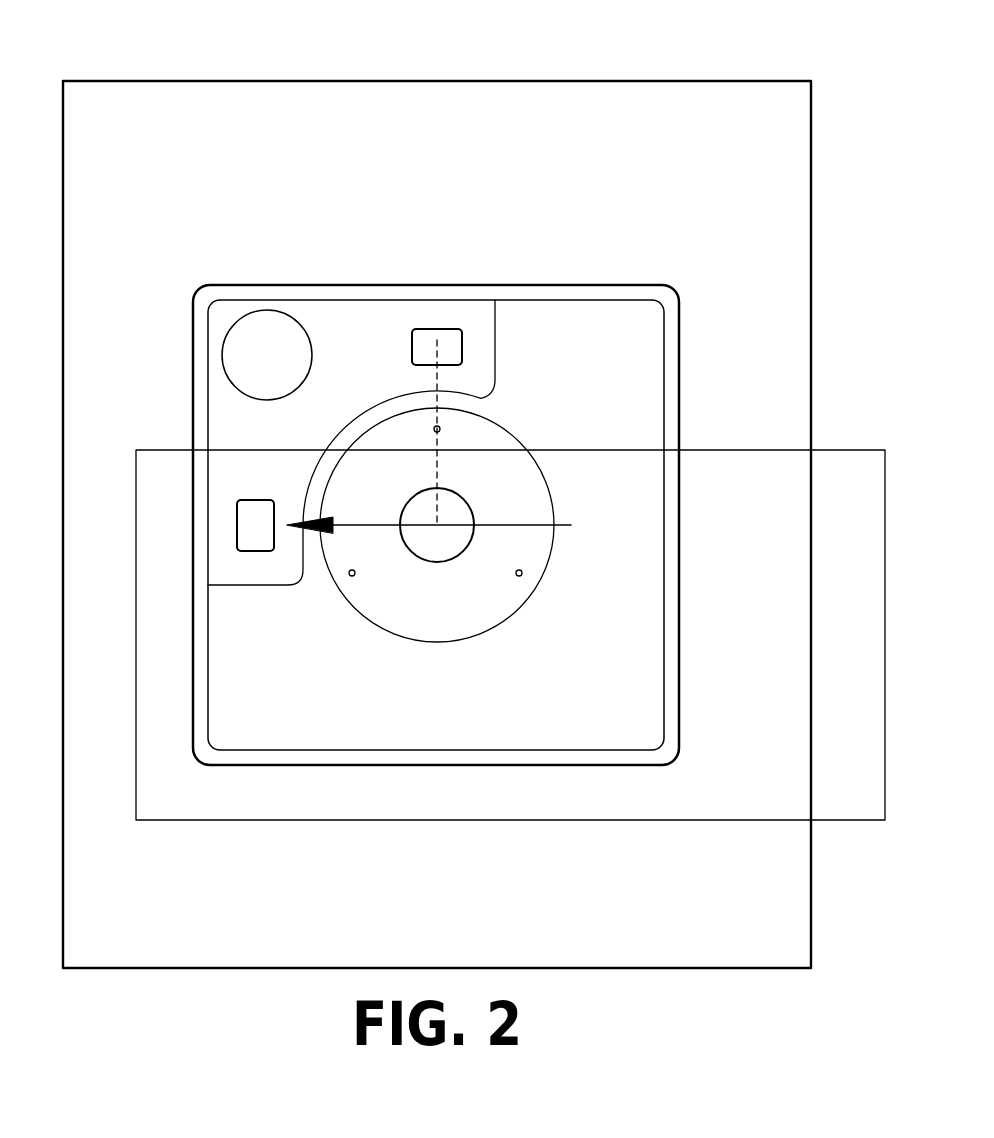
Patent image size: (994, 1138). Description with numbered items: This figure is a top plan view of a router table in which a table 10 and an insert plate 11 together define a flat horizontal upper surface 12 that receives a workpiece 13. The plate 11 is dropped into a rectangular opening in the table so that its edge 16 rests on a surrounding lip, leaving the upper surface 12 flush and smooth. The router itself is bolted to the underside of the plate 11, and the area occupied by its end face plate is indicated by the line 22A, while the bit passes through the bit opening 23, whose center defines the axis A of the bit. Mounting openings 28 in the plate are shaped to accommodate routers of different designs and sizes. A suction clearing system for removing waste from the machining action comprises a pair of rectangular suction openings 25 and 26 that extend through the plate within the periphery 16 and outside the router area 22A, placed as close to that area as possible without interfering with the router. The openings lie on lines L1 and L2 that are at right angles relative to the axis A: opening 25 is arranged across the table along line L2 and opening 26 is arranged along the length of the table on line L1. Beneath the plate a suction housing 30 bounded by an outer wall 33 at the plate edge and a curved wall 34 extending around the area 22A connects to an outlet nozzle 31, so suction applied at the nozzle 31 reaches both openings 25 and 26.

The table 10 is at (585, 112).
The horizontal upper surface 12 is at (212, 163).
The workpiece 13 is at (853, 525).
The edge of the plate 16 is at (613, 285).
The insert plate 11 is at (587, 335).
The outer wall 33 is at (205, 378).
The suction housing 30 is at (317, 318).
The outlet nozzle 31 is at (240, 336).
The curved wall 34 is at (366, 417).
The area of the end plate 22A is at (557, 540).
The bit opening 23 is at (467, 495).
The axis of the bit A is at (437, 525).
The line L2 is at (375, 522).
The line L1 is at (437, 400).
The suction opening 26 is at (452, 332).
The suction opening 25 is at (257, 548).
The mounting openings 28 is at (437, 429).